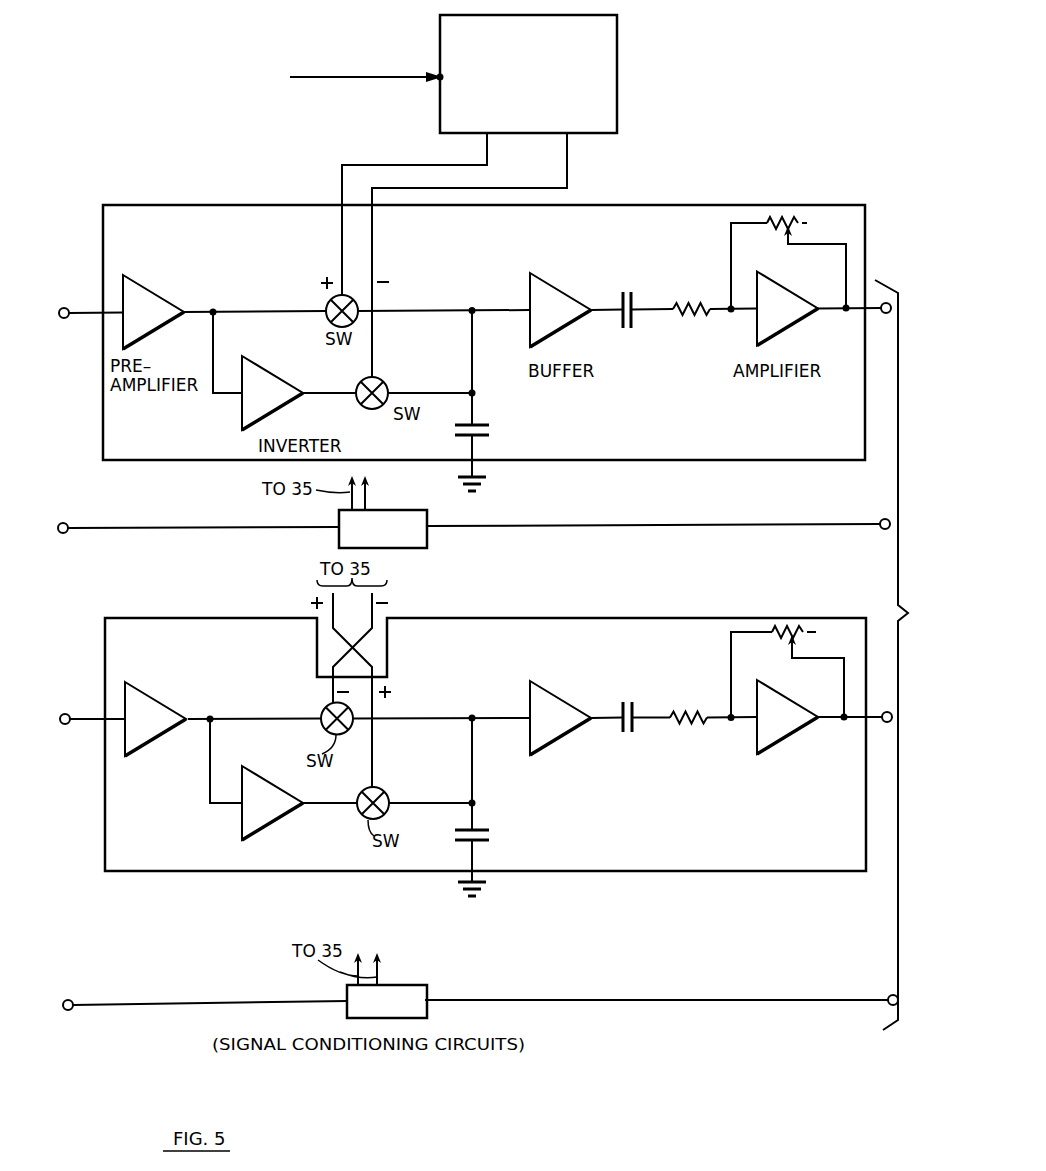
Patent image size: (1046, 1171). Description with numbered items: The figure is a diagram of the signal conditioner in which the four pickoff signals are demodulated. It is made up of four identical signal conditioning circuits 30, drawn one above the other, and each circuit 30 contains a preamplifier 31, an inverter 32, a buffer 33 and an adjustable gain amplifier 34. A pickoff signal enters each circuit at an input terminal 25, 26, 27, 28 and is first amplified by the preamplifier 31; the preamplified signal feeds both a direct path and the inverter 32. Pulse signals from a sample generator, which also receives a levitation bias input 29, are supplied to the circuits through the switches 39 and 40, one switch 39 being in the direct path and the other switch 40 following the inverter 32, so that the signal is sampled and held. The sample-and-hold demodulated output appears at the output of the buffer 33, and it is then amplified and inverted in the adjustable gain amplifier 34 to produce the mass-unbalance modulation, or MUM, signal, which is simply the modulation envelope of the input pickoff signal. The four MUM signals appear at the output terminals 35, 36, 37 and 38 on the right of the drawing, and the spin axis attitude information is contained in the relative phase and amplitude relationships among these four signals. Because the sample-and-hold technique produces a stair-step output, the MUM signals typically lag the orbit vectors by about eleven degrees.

The input terminal 25 is at (61, 318).
The input terminal 26 is at (61, 533).
The input terminal 27 is at (66, 724).
The input terminal 28 is at (72, 1001).
The levitation bias input 29 is at (438, 74).
The signal conditioning circuit 30 is at (188, 215).
The preamplifier 31 is at (142, 308).
The inverter 32 is at (248, 391).
The buffer 33 is at (548, 306).
The adjustable gain amplifier 34 is at (770, 303).
The output terminal 35 is at (592, 100).
The output terminal 36 is at (882, 529).
The output terminal 37 is at (887, 722).
The output terminal 38 is at (889, 1005).
The switch 39 is at (330, 300).
The switch 40 is at (380, 382).